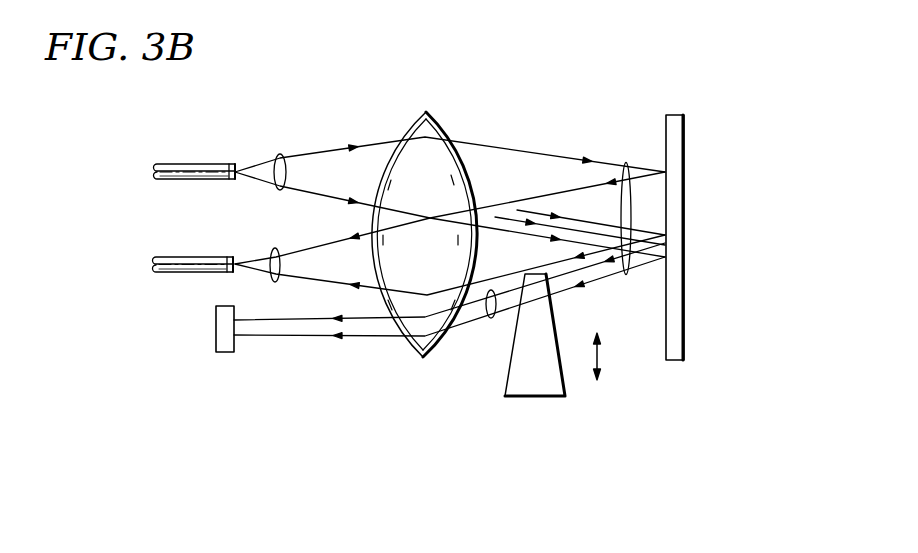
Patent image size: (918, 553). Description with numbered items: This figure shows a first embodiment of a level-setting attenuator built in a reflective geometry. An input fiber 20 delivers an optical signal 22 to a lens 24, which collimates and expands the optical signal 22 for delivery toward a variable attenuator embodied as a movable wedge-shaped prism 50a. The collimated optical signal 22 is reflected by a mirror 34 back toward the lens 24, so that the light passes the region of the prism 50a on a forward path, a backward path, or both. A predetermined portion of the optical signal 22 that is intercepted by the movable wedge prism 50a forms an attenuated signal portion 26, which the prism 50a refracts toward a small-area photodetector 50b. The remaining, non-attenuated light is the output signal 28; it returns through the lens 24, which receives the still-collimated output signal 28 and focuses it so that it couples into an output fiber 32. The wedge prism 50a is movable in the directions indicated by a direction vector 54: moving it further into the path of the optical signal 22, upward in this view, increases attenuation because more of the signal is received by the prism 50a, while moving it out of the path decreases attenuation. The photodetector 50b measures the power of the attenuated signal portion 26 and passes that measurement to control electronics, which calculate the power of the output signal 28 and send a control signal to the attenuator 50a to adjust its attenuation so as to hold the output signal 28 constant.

The input fiber 20 is at (177, 162).
The optical signal 22 is at (282, 153).
The lens 24 is at (430, 128).
The attenuated signal portion 26 is at (490, 320).
The output signal 28 is at (272, 250).
The output fiber 32 is at (175, 257).
The mirror 34 is at (685, 254).
The movable wedge-shaped prism 50a is at (510, 383).
The small-area photodetector 50b is at (216, 330).
The direction vector 54 is at (600, 358).